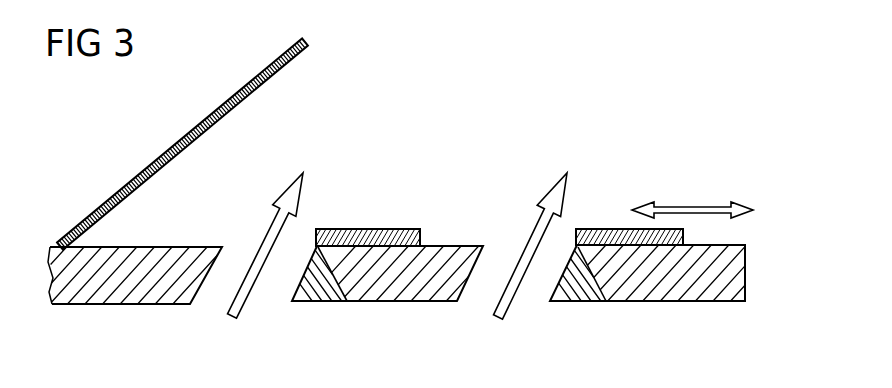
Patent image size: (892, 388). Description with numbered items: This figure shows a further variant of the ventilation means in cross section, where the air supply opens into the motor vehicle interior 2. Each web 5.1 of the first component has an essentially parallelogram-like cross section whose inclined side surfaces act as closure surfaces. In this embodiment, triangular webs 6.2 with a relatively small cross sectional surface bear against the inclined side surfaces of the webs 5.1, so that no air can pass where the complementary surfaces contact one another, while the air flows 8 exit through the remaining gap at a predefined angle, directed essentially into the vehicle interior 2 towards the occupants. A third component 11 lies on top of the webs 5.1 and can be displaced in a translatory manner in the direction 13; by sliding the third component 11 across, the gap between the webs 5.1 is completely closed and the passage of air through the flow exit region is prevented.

The motor vehicle interior 2 is at (512, 80).
The webs 5.1 is at (388, 287).
The triangular webs 6.2 is at (324, 298).
The air flows 8 is at (276, 228).
The third component 11 is at (369, 217).
The direction 13 is at (694, 209).